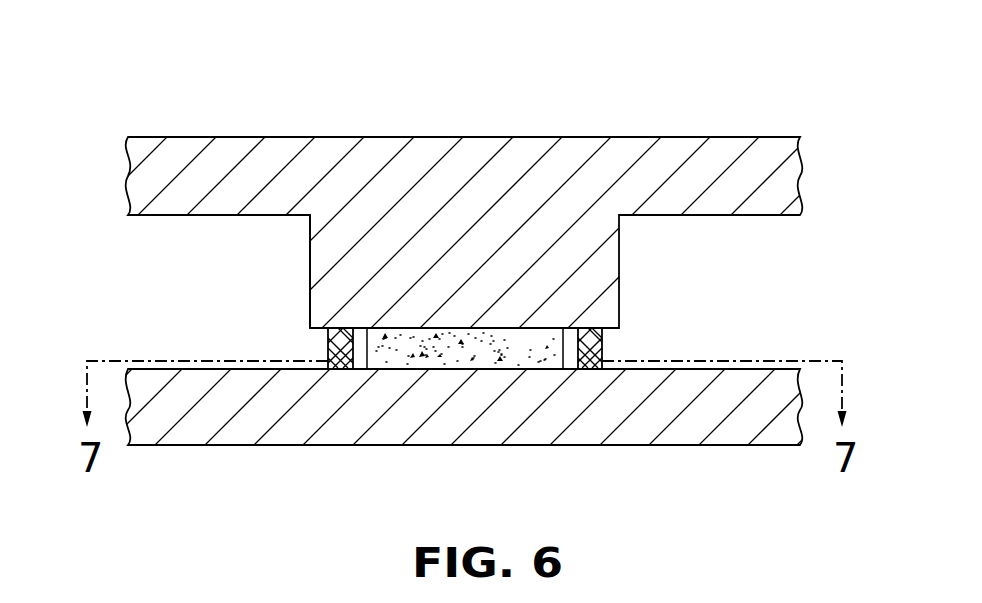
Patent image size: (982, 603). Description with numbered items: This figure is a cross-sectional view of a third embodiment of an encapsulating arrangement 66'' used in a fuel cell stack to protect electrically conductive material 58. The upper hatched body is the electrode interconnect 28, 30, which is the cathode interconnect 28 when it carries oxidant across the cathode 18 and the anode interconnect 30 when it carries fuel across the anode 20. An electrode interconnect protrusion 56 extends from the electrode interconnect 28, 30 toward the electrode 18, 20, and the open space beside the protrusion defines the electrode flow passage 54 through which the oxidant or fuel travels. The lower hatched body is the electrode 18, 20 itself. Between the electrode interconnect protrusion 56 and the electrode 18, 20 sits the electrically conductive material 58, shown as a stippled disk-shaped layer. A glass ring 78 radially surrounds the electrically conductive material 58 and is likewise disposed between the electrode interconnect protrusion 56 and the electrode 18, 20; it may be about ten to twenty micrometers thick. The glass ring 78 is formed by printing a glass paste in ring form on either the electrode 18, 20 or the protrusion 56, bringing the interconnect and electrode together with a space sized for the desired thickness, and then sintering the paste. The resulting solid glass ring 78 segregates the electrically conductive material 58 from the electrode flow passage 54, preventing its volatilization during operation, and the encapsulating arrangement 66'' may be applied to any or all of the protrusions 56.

The cathode interconnect 28 is at (491, 240).
The anode interconnect 30 is at (361, 137).
The electrode flow passage 54 is at (250, 270).
The electrode interconnect protrusion 56 is at (310, 303).
The glass ring 78 is at (328, 335).
The encapsulating arrangement 66'' is at (697, 335).
The electrically conductive material 58 is at (552, 355).
The cathode 18 is at (491, 328).
The anode 20 is at (757, 428).